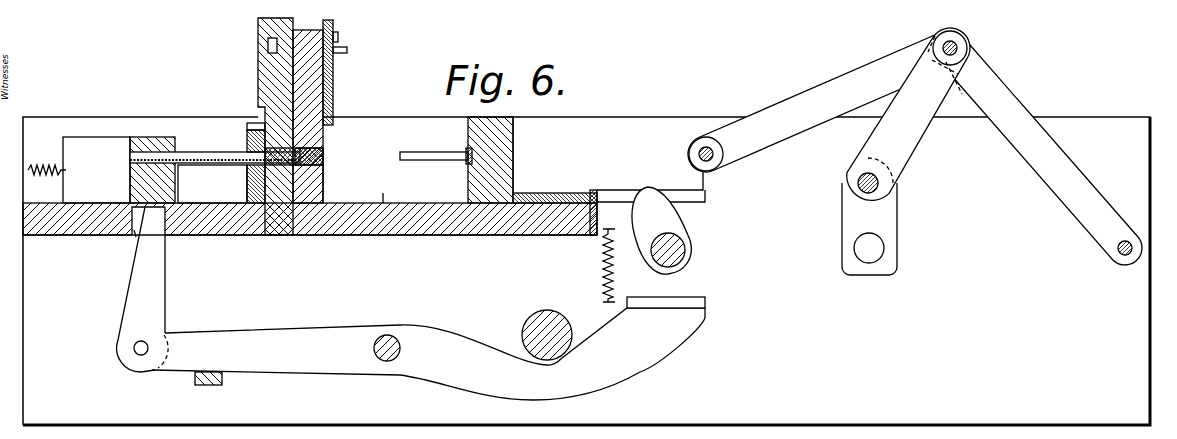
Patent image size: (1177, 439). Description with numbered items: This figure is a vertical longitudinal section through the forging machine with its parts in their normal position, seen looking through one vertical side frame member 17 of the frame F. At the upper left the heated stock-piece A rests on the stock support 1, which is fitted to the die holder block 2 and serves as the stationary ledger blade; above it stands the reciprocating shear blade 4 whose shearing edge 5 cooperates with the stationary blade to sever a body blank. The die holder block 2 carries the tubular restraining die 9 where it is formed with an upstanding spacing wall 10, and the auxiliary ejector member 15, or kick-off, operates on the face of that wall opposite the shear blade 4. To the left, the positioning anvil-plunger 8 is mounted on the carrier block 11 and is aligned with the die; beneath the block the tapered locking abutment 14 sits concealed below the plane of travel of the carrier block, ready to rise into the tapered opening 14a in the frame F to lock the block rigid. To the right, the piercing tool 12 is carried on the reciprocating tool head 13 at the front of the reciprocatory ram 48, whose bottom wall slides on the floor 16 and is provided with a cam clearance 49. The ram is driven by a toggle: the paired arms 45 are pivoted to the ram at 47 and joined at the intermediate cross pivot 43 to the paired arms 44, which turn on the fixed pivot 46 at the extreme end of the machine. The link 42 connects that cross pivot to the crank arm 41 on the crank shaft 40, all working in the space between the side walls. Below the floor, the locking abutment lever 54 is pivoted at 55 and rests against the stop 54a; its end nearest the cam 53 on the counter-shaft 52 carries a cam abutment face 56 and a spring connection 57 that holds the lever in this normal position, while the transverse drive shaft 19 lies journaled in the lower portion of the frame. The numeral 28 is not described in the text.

The stock support 1 is at (247, 142).
The die holder block 2 is at (320, 195).
The reciprocating shear blade 4 is at (260, 72).
The shearing edge 5 is at (275, 116).
The positioning anvil-plunger 8 is at (232, 165).
The tubular restraining die 9 is at (318, 170).
The spacing wall 10 is at (312, 140).
The carrier block 11 is at (132, 185).
The piercing tool 12 is at (430, 165).
The reciprocating tool head 13 is at (470, 132).
The locking abutment 14 is at (170, 273).
The tapered opening 14a is at (136, 237).
The auxiliary ejector member 15 is at (336, 77).
The floor 16 is at (384, 203).
The vertical side frame member 17 is at (586, 271).
The drive shaft 19 is at (535, 322).
The spring 28 is at (37, 168).
The crank shaft 40 is at (872, 251).
The crank arm 41 is at (883, 222).
The link 42 is at (908, 145).
The intermediate cross pivot 43 is at (962, 50).
The toggle arm 44 is at (1060, 152).
The toggle arm 45 is at (808, 94).
The fixed pivot 46 is at (1120, 260).
The pivot 47 is at (698, 154).
The reciprocatory ram 48 is at (540, 155).
The cam clearance 49 is at (610, 200).
The counter-shaft 52 is at (672, 250).
The cam 53 is at (660, 215).
The locking abutment lever 54 is at (428, 354).
The stop 54a is at (210, 386).
The pivot 55 is at (389, 335).
The cam abutment face 56 is at (688, 298).
The spring connection 57 is at (600, 265).
The stock-piece A is at (197, 162).
The frame F is at (336, 232).